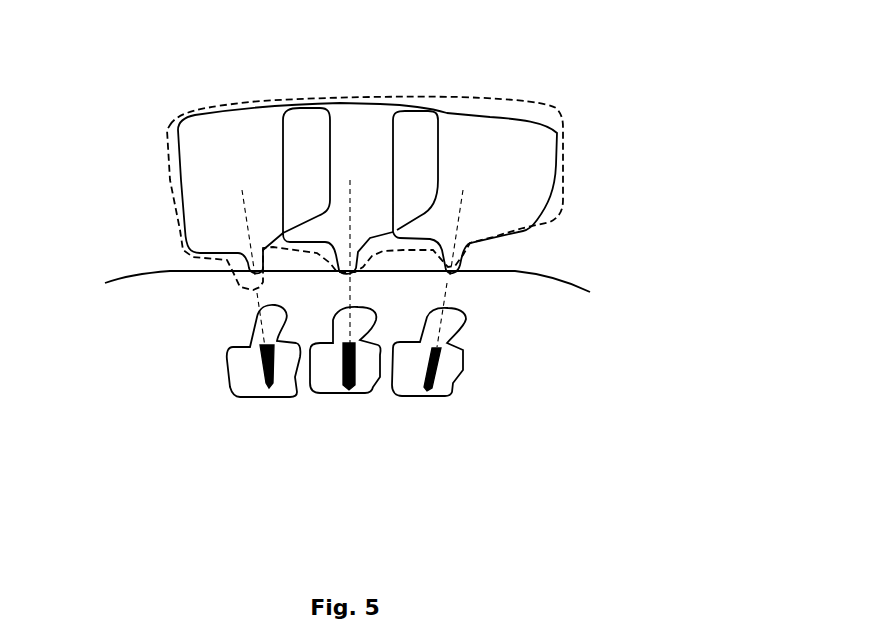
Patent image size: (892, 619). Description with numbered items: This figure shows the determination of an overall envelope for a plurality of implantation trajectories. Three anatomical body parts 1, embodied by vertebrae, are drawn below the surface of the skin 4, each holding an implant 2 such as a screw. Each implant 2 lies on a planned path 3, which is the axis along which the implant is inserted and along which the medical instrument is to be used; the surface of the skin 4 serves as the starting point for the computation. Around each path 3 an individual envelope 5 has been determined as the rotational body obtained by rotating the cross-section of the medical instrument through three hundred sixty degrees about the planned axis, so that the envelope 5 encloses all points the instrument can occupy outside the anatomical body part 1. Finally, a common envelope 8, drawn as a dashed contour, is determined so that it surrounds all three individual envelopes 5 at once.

The anatomical body part 1 is at (240, 363).
The implant 2 is at (267, 385).
The path 3 is at (263, 295).
The skin 4 is at (560, 283).
The envelope 5 is at (177, 118).
The common envelope 8 is at (562, 178).